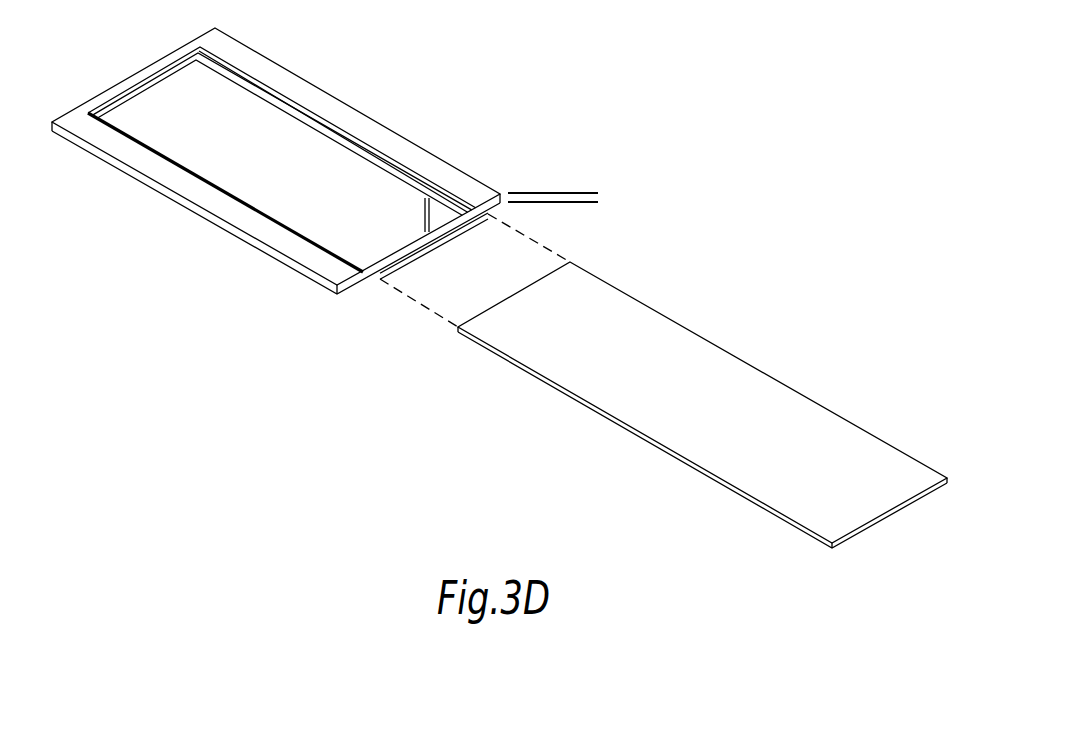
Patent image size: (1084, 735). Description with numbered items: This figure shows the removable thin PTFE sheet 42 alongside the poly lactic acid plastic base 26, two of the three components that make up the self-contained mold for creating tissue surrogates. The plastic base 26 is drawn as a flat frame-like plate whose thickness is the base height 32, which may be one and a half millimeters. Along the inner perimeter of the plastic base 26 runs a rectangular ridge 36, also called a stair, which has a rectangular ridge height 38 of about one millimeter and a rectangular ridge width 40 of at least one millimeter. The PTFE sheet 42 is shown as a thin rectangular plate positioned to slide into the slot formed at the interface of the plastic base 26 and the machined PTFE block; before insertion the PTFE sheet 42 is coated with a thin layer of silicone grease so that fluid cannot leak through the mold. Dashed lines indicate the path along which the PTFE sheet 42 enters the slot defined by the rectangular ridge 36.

The plastic base 26 is at (441, 134).
The base height 32 is at (572, 186).
The rectangular ridge 36 is at (196, 58).
The rectangular ridge height 38 is at (376, 293).
The rectangular ridge width 40 is at (447, 222).
The PTFE sheet 42 is at (232, 138).